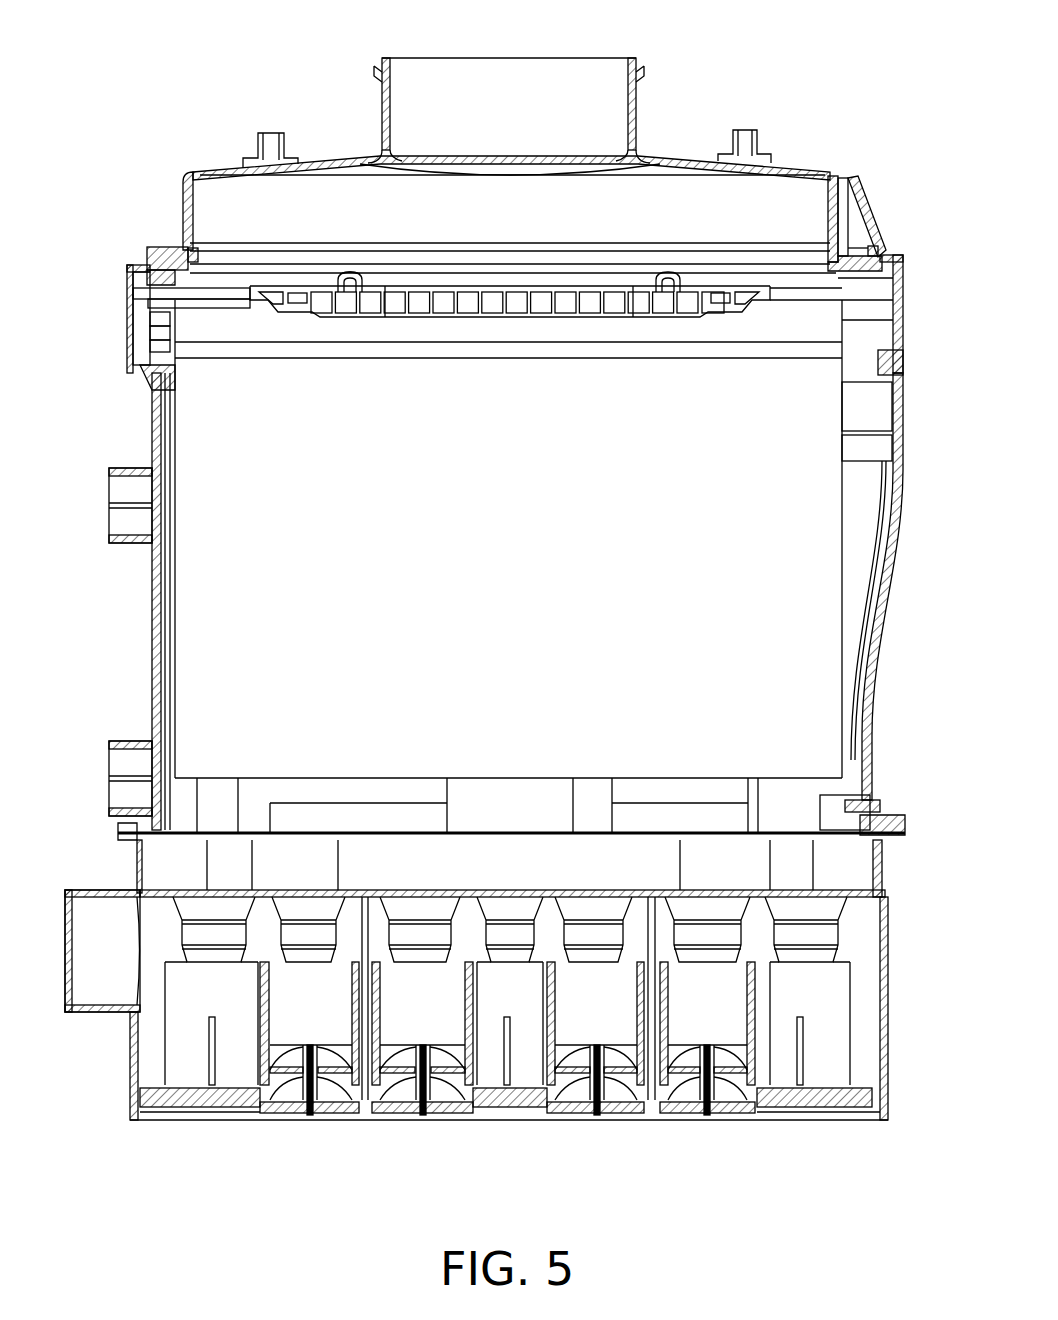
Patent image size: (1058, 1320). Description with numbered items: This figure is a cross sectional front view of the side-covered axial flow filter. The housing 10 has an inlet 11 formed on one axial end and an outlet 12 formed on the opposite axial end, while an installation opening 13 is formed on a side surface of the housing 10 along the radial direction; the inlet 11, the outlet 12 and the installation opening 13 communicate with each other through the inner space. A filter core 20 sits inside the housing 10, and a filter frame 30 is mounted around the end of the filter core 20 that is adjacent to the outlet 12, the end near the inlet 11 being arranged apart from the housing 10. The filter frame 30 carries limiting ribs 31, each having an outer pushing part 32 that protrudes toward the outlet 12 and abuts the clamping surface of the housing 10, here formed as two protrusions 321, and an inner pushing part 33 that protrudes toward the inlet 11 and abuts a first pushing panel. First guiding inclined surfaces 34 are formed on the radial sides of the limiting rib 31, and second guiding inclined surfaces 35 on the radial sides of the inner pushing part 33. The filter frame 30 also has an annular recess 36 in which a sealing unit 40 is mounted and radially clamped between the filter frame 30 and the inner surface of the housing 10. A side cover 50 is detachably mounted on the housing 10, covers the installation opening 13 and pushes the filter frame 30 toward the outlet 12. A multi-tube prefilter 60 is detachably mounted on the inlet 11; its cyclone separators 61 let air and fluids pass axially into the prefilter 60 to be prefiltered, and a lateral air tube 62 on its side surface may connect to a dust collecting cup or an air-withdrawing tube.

The housing 10 is at (115, 430).
The inlet 11 is at (511, 803).
The outlet 12 is at (505, 95).
The installation opening 13 is at (860, 522).
The filter core 20 is at (817, 604).
The filter frame 30 is at (648, 228).
The limiting rib 31 is at (656, 306).
The outer pushing part 32 is at (337, 262).
The protrusion 321 is at (358, 270).
The inner pushing part 33 is at (545, 316).
The first guiding inclined surface 34 is at (261, 306).
The second guiding inclined surface 35 is at (312, 313).
The annular recess 36 is at (818, 260).
The sealing unit 40 is at (178, 247).
The side cover 50 is at (888, 368).
The multi-tube prefilter 60 is at (890, 982).
The cyclone separator 61 is at (818, 934).
The lateral air tube 62 is at (108, 910).